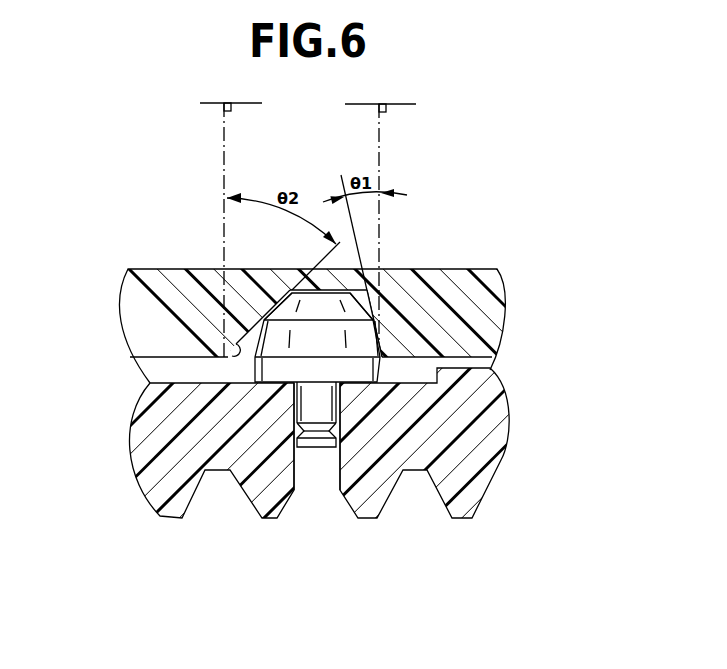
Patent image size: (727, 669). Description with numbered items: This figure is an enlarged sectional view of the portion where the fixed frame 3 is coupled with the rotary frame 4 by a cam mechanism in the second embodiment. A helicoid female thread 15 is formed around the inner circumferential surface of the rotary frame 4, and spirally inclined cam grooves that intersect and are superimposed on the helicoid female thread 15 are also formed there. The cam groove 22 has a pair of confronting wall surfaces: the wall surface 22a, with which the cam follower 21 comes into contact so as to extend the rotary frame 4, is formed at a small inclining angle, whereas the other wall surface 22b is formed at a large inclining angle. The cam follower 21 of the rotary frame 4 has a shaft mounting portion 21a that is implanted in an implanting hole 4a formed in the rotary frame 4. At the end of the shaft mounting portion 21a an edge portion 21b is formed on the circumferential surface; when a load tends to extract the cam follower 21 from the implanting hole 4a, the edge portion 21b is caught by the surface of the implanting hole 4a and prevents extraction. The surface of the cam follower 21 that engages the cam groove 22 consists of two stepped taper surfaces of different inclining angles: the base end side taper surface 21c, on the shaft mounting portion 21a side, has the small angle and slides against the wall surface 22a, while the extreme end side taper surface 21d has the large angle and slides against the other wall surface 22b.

The fixed frame 3 is at (363, 384).
The rotary frame 4 is at (363, 384).
The implanting hole 4a is at (308, 455).
The helicoid female thread 15 is at (468, 506).
The cam follower 21 is at (415, 434).
The shaft mounting portion 21a is at (327, 402).
The edge portion 21b is at (343, 443).
The base end side taper surface 21c is at (353, 346).
The extreme end side taper surface 21d is at (368, 308).
The cam groove 22 is at (258, 331).
The wall surface 22a is at (367, 300).
The wall surface 22b is at (232, 344).